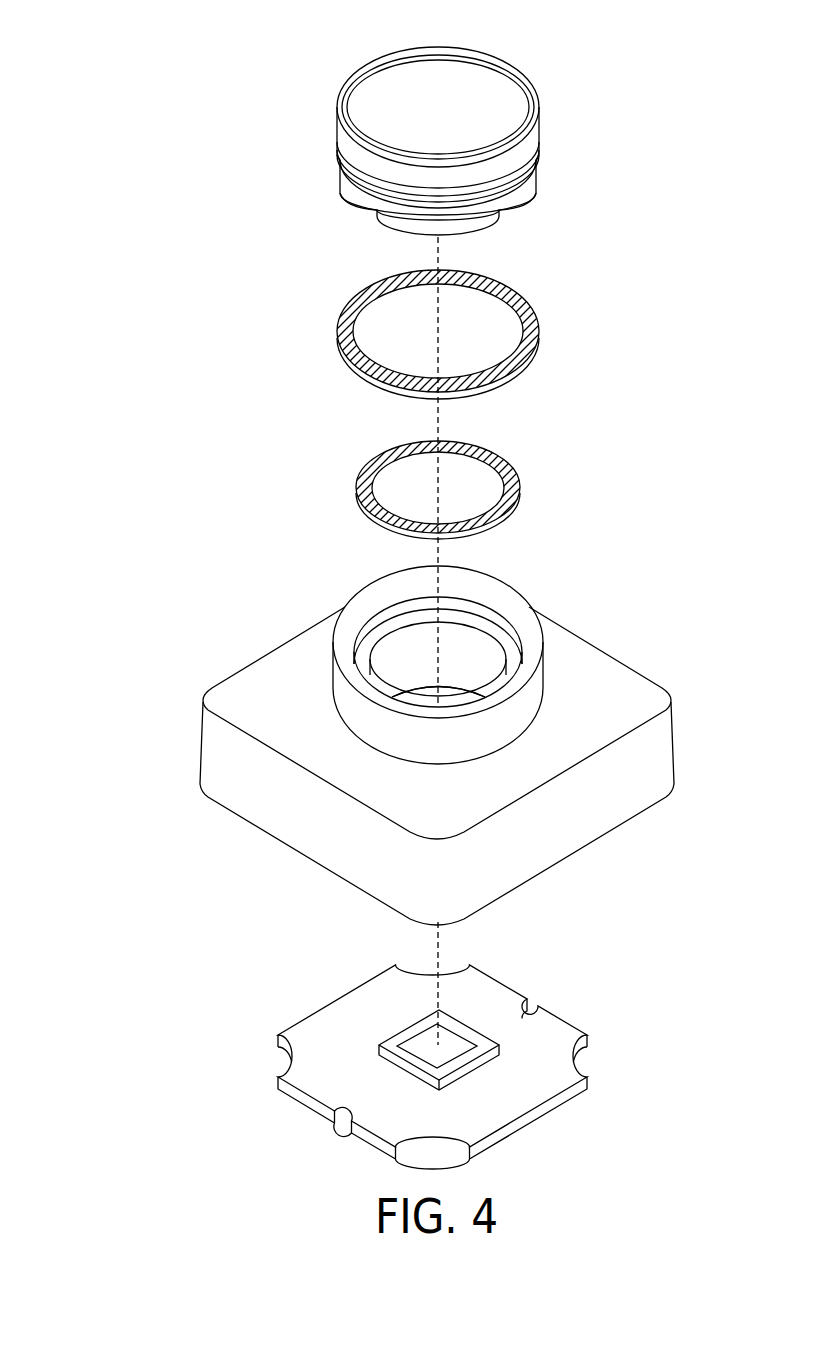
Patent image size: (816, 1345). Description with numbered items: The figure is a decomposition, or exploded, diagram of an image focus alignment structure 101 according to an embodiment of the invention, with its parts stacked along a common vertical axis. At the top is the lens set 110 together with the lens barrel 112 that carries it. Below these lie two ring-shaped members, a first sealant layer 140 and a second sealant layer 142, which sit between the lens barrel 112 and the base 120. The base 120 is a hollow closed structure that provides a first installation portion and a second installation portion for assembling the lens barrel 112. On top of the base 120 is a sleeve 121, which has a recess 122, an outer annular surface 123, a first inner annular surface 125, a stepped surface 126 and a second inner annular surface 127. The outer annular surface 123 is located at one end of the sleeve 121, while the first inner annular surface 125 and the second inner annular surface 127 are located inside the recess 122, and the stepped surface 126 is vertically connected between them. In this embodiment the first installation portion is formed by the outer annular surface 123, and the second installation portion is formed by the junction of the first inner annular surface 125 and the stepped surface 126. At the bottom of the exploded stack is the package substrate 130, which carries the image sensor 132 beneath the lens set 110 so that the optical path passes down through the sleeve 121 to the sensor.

The image focus alignment structure 101 is at (70, 58).
The lens set 110 is at (476, 141).
The lens barrel 112 is at (540, 133).
The base 120 is at (446, 730).
The sleeve 121 is at (545, 650).
The recess 122 is at (387, 668).
The outer annular surface 123 is at (453, 602).
The first inner annular surface 125 is at (480, 622).
The stepped surface 126 is at (505, 647).
The second inner annular surface 127 is at (400, 655).
The package substrate 130 is at (543, 1038).
The image sensor 132 is at (450, 1047).
The first sealant layer 140 is at (533, 318).
The second sealant layer 142 is at (363, 480).